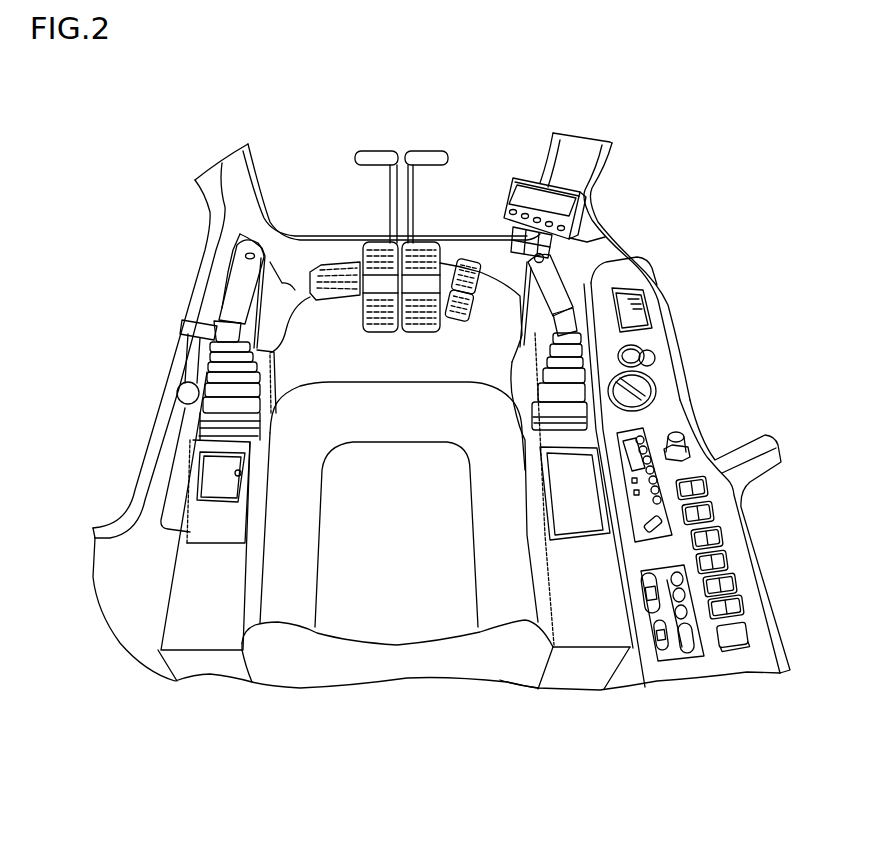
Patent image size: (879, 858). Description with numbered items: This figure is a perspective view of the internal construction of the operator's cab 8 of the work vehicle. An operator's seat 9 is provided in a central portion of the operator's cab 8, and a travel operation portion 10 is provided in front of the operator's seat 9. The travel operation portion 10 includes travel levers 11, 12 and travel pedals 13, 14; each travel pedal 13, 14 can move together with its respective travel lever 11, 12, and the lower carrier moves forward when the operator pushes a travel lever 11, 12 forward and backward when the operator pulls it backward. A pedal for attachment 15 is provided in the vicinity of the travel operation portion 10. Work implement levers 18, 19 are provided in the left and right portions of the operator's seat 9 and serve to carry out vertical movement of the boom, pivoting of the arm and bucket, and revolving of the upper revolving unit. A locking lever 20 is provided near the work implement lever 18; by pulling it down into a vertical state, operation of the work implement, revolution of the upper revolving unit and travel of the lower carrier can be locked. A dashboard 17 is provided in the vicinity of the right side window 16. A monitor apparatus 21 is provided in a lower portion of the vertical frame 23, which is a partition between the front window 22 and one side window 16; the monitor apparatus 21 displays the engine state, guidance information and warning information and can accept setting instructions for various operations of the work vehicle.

The operator's cab 8 is at (645, 137).
The operator's seat 9 is at (393, 627).
The travel operation portion 10 is at (395, 102).
The travel lever 11 is at (370, 151).
The travel lever 12 is at (430, 151).
The travel pedal 13 is at (388, 335).
The travel pedal 14 is at (415, 335).
The pedal for attachment 15 is at (470, 262).
The side window 16 is at (153, 382).
The dashboard 17 is at (674, 399).
The work implement lever 18 is at (238, 276).
The work implement lever 19 is at (553, 273).
The locking lever 20 is at (183, 322).
The monitor apparatus 21 is at (522, 165).
The front window 22 is at (303, 148).
The vertical frame 23 is at (582, 146).